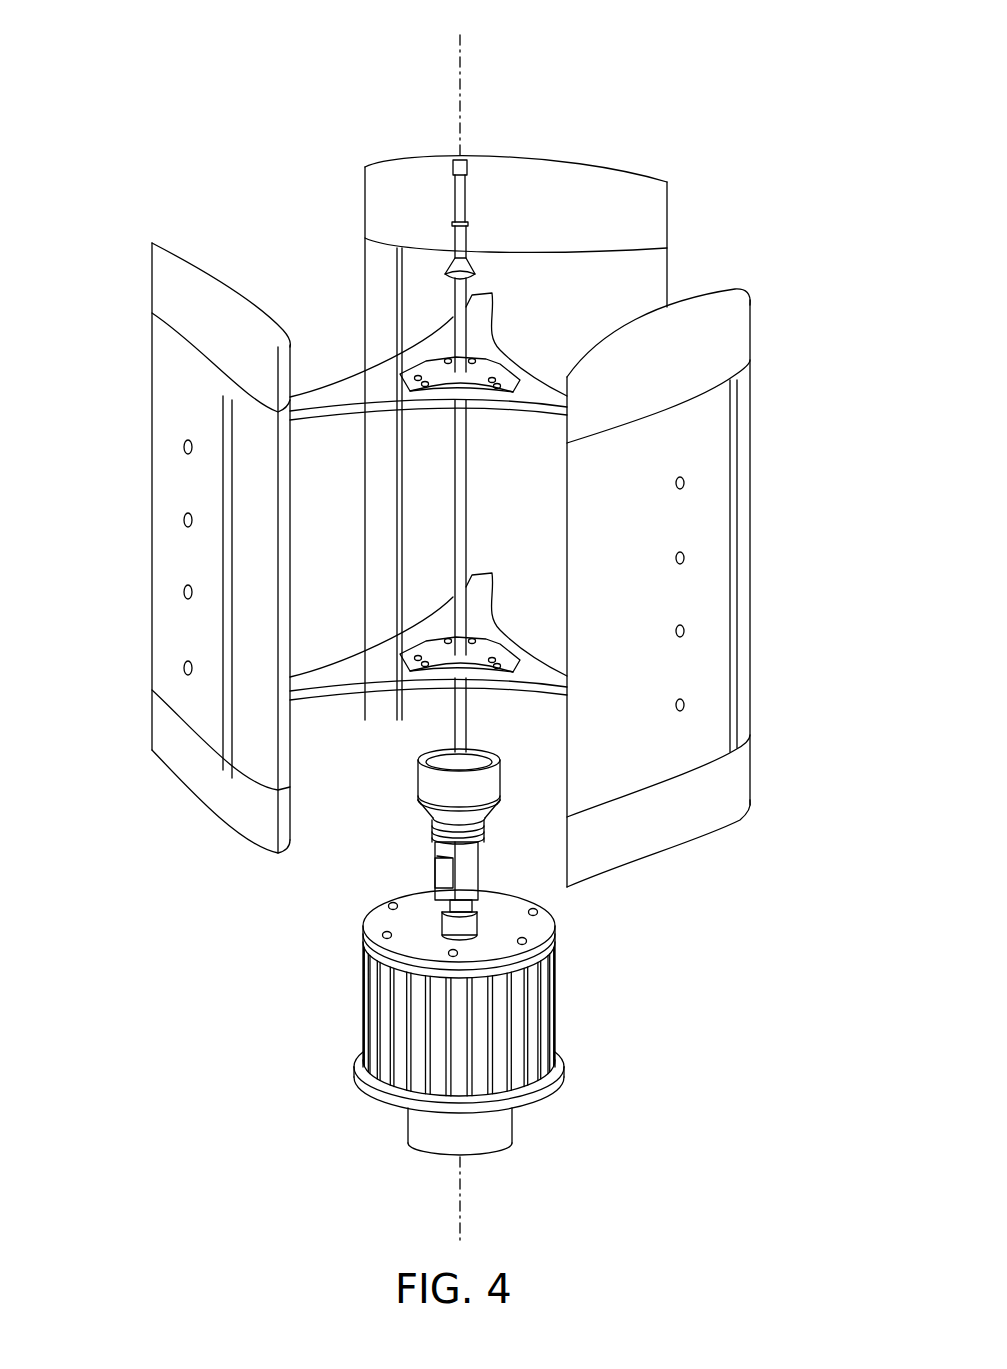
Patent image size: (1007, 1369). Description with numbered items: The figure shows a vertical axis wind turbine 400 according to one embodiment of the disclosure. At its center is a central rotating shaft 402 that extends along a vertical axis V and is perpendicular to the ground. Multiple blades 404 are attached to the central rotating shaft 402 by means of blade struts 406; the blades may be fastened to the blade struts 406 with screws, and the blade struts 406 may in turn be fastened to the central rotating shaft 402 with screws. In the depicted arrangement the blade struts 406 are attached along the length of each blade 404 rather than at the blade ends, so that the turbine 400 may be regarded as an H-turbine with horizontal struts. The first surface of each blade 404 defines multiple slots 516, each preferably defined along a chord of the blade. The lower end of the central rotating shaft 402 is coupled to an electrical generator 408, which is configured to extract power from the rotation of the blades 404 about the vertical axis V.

The vertical axis wind turbine 400 is at (216, 58).
The central rotating shaft 402 is at (455, 318).
The blades 404 is at (162, 368).
The blade strut 406 is at (335, 383).
The electrical generator 408 is at (555, 1013).
The slots 516 is at (183, 447).
The vertical axis V is at (461, 77).